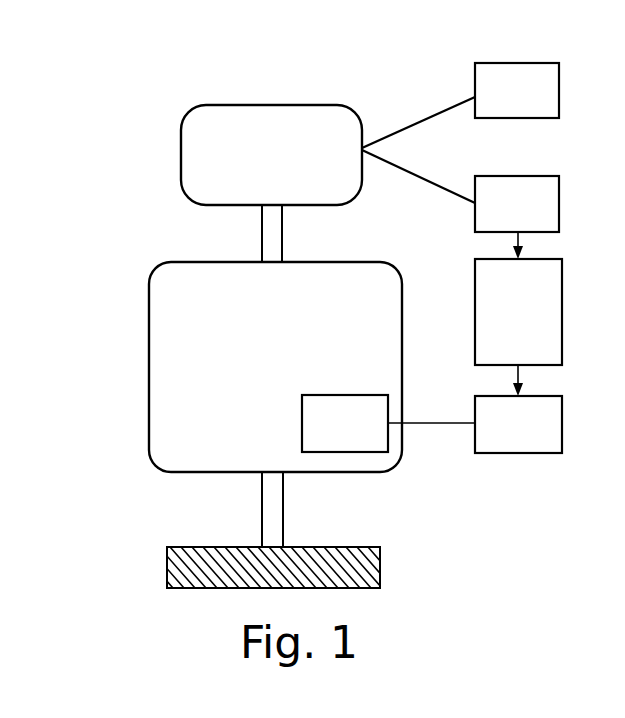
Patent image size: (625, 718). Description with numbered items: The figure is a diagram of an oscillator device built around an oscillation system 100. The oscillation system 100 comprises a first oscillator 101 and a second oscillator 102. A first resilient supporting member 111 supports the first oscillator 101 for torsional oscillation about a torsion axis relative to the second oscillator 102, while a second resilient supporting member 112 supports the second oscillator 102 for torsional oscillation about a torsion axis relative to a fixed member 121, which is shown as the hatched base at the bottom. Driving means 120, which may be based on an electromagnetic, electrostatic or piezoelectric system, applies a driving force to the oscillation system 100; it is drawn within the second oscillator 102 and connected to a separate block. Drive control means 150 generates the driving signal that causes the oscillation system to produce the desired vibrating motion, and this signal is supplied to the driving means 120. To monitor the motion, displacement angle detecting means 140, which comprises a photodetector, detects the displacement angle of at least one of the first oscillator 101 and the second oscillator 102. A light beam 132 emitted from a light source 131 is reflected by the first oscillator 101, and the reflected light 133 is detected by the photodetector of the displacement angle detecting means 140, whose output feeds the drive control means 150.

The oscillation system 100 is at (131, 265).
The first oscillator 101 is at (271, 155).
The second oscillator 102 is at (275, 367).
The first resilient supporting member 111 is at (259, 231).
The second resilient supporting member 112 is at (262, 510).
The driving means 120 is at (432, 424).
The fixed member 121 is at (382, 563).
The light source 131 is at (517, 90).
The light beam 132 is at (425, 116).
The reflected light 133 is at (427, 182).
The displacement angle detecting means 140 is at (517, 204).
The drive control means 150 is at (518, 312).